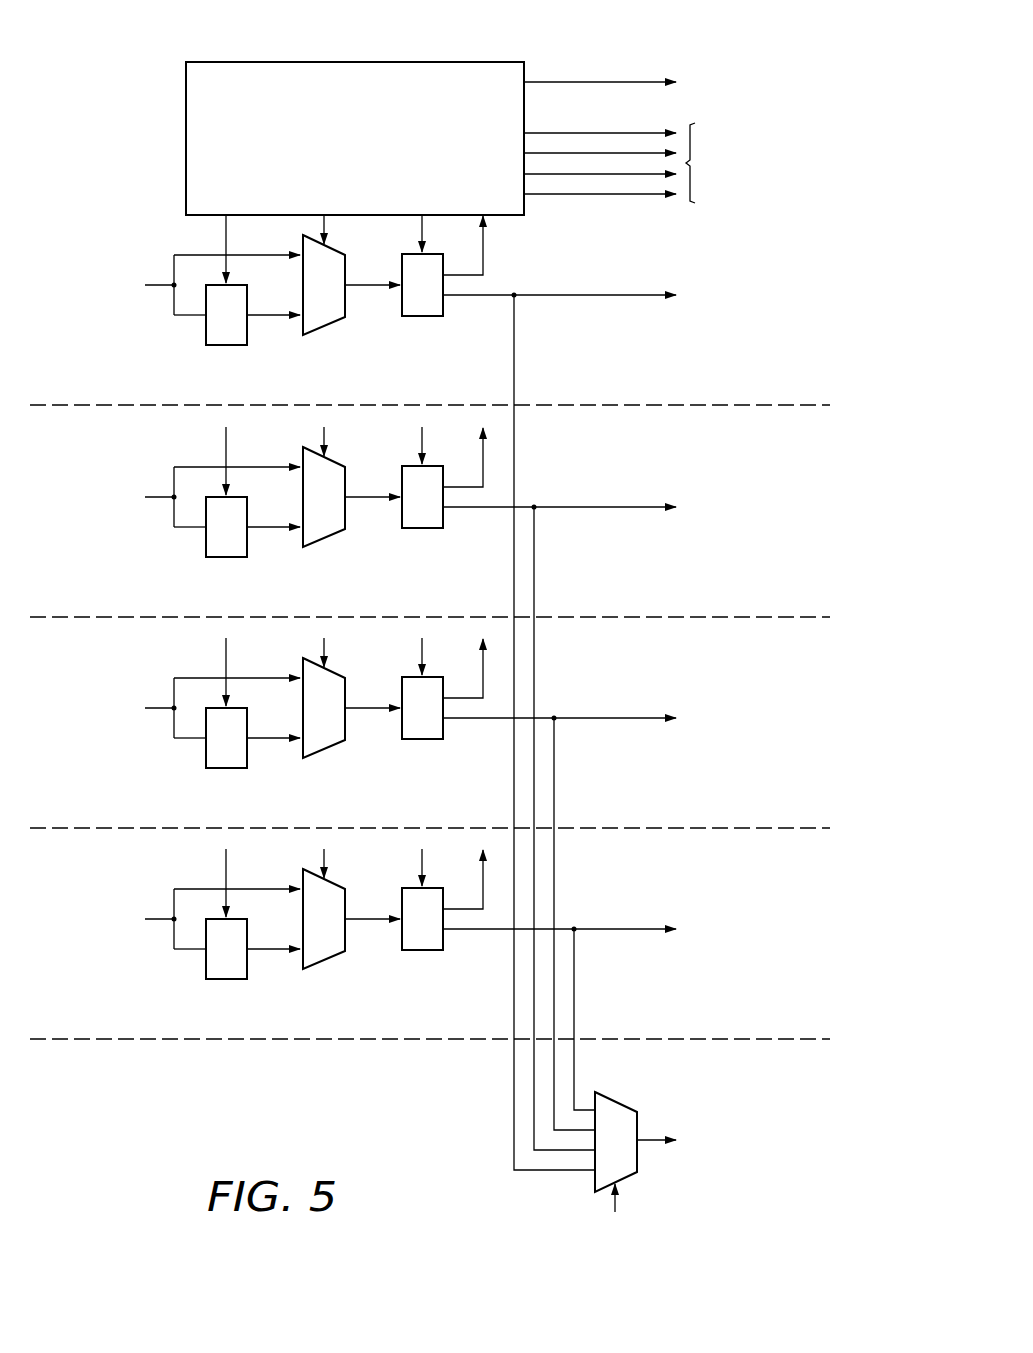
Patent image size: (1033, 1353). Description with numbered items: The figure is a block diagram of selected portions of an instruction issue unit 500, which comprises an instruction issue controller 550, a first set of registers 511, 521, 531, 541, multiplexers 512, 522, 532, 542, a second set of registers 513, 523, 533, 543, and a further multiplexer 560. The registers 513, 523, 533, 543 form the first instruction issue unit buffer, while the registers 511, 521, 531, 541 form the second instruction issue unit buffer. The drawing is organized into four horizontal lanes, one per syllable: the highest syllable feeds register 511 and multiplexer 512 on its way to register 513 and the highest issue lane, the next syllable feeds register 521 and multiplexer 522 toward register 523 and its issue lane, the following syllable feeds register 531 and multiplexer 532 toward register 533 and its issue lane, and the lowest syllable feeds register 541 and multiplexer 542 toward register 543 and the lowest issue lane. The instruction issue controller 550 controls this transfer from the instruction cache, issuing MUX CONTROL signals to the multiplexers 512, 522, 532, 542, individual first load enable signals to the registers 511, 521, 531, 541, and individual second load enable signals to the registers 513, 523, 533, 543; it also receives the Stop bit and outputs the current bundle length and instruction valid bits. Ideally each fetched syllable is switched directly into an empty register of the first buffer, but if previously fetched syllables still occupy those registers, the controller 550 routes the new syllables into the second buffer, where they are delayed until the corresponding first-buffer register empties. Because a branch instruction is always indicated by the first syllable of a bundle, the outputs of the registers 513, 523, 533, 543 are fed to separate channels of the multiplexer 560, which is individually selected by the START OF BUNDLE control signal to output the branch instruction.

The instruction issue unit 500 is at (126, 51).
The instruction issue controller 550 is at (186, 137).
The register 511 is at (224, 346).
The multiplexer 512 is at (324, 331).
The register 513 is at (423, 317).
The register 521 is at (224, 558).
The multiplexer 522 is at (324, 543).
The register 523 is at (423, 529).
The register 531 is at (224, 769).
The multiplexer 532 is at (324, 754).
The register 533 is at (423, 740).
The register 541 is at (224, 980).
The multiplexer 542 is at (324, 965).
The register 543 is at (423, 951).
The multiplexer 560 is at (611, 1097).